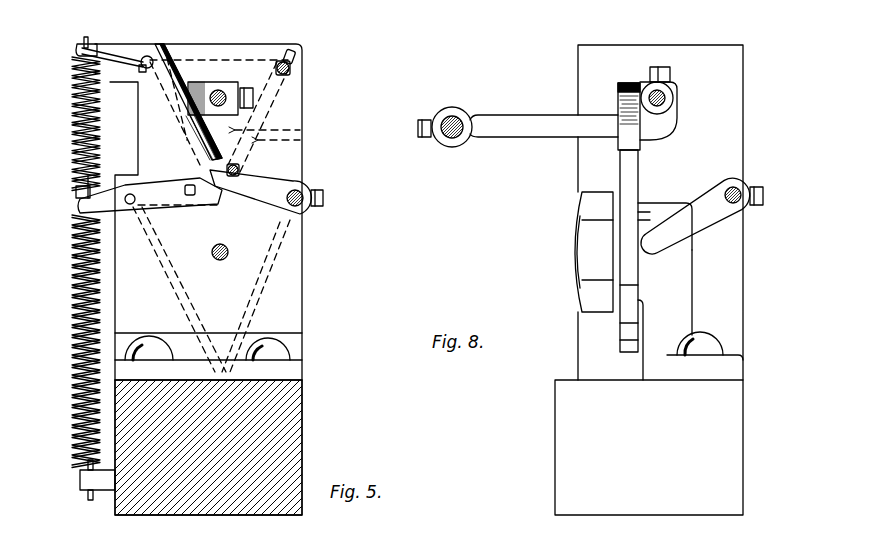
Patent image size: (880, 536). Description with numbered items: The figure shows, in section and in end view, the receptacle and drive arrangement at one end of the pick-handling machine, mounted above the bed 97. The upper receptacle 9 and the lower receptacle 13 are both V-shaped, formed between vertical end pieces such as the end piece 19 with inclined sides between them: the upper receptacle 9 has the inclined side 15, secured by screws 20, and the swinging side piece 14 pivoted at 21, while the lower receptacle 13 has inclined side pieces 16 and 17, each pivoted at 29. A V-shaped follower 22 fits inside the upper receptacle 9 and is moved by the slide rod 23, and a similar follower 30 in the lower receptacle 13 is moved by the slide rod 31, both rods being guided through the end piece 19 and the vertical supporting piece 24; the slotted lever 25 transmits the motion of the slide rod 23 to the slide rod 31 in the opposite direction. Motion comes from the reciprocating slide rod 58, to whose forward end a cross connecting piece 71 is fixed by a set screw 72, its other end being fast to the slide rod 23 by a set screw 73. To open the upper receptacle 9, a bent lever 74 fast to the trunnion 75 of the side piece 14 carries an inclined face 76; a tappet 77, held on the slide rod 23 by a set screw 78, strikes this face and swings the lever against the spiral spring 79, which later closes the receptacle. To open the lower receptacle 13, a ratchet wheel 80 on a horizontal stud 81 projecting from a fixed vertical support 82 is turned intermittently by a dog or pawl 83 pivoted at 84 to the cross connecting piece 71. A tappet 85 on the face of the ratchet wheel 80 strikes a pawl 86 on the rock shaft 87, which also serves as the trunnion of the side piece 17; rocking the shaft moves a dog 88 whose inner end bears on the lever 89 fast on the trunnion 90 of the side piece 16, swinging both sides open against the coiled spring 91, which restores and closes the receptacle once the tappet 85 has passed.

In FIG. 5, the upper receptacle 9 is at (302, 130).
In FIG. 5, the lower receptacle 13 is at (258, 262).
In FIG. 5, the inclined side piece 14 is at (170, 138).
In FIG. 5, the inclined side 15 is at (302, 142).
In FIG. 5, the inclined side piece 16 is at (175, 300).
In FIG. 5, the inclined side piece 17 is at (255, 305).
In FIG. 5, the end piece 19 is at (290, 310).
In FIG. 5, the screws 20 is at (292, 70).
In FIG. 5, the pivot 21 is at (145, 56).
In FIG. 5, the follower 22 is at (268, 58).
In FIG. 5, the slide rod 23 is at (220, 95).
In FIG. 8, the vertical supporting piece 24 is at (745, 56).
In FIG. 8, the slotted lever 25 is at (665, 98).
In FIG. 5, the pivots 29 is at (303, 203).
In FIG. 8, the pivots 29 is at (733, 195).
In FIG. 5, the follower 30 is at (290, 182).
In FIG. 5, the slide rod 31 is at (224, 244).
In FIG. 8, the slide rod 58 is at (452, 132).
In FIG. 8, the cross connecting piece 71 is at (516, 113).
In FIG. 8, the set screw 72 is at (420, 118).
In FIG. 8, the set screw 73 is at (666, 70).
In FIG. 5, the bent lever 74 is at (108, 48).
In FIG. 5, the pivot or trunnion 75 is at (139, 70).
In FIG. 5, the inclined face 76 is at (215, 135).
In FIG. 5, the tappet 77 is at (201, 80).
In FIG. 5, the set screw 78 is at (252, 88).
In FIG. 5, the spiral spring 79 is at (78, 108).
In FIG. 8, the ratchet wheel 80 is at (622, 170).
In FIG. 8, the horizontal stud 81 is at (572, 240).
In FIG. 8, the fixed vertical support 82 is at (695, 312).
In FIG. 8, the dog or pawl 83 is at (643, 130).
In FIG. 8, the pivot 84 is at (615, 98).
In FIG. 8, the tappet 85 is at (735, 162).
In FIG. 8, the pawl or dog 86 is at (712, 225).
In FIG. 5, the rock shaft 87 is at (325, 198).
In FIG. 8, the rock shaft 87 is at (738, 192).
In FIG. 5, the dog 88 is at (248, 185).
In FIG. 5, the lever 89 is at (158, 185).
In FIG. 5, the trunnion 90 is at (118, 192).
In FIG. 5, the coiled spring 91 is at (76, 338).
In FIG. 5, the bed 97 is at (283, 418).
In FIG. 8, the bed 97 is at (585, 392).